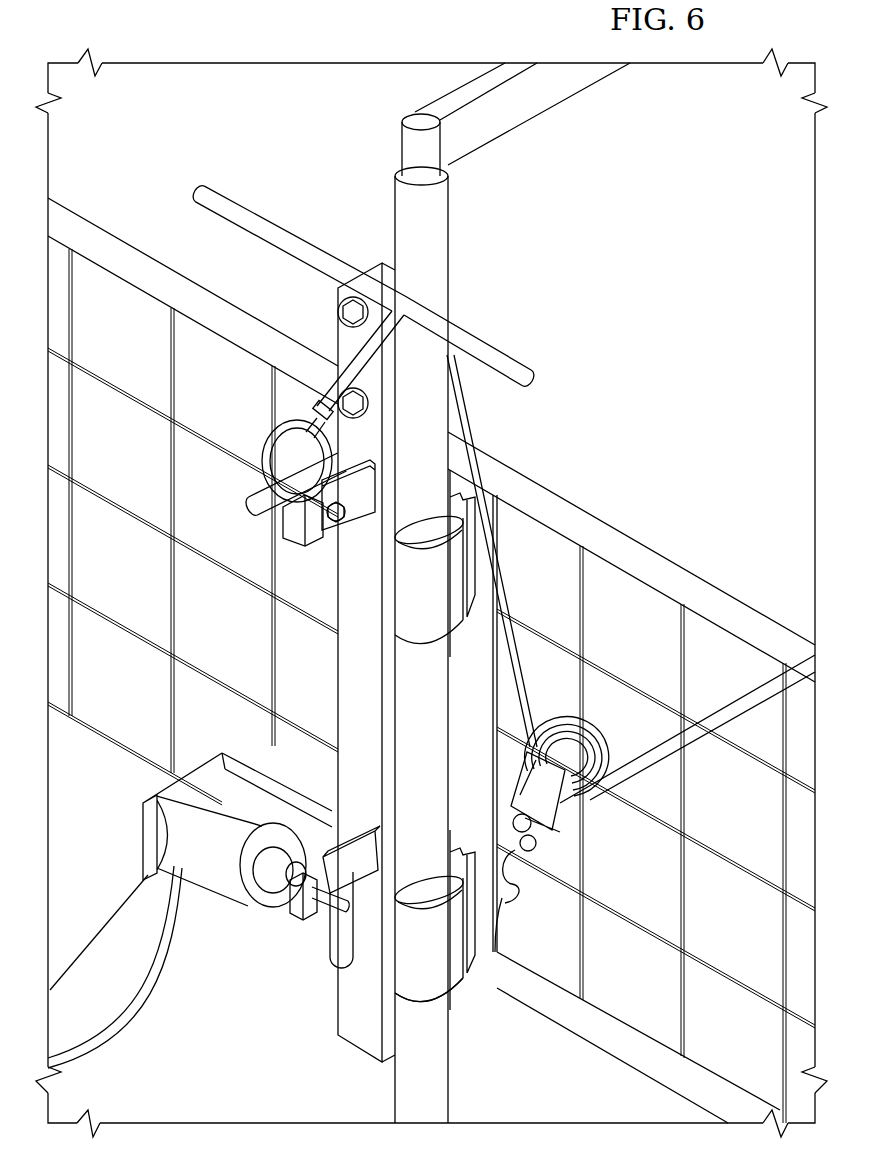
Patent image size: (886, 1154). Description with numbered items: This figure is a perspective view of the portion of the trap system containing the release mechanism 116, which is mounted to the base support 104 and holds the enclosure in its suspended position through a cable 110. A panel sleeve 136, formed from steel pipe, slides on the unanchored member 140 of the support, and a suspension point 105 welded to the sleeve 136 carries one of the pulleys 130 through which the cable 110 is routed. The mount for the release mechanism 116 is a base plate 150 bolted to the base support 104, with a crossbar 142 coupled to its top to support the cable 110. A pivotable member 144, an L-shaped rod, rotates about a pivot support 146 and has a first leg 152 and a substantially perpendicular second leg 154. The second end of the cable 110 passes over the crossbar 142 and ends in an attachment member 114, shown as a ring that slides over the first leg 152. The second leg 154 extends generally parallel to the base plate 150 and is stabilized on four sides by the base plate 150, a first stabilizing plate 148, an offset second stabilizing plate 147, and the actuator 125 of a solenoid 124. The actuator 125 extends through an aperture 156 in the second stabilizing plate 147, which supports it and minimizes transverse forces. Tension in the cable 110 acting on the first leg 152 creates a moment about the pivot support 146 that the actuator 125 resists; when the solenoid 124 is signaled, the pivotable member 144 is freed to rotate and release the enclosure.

The base support 104 is at (452, 210).
The suspension point 105 is at (502, 910).
The cable 110 is at (472, 408).
The attachment member 114 is at (266, 442).
The release mechanism 116 is at (499, 328).
The solenoid 124 is at (195, 880).
The actuator 125 is at (367, 934).
The pulleys 130 is at (600, 722).
The sleeves 136 is at (448, 559).
The unanchored member 140 is at (451, 260).
The crossbar 142 is at (262, 206).
The pivotable member 144 is at (284, 522).
The pivot support 146 is at (345, 516).
The second stabilizing plate 147 is at (290, 912).
The first stabilizing plate 148 is at (362, 830).
The base plate 150 is at (336, 333).
The first leg 152 is at (251, 499).
The second leg 154 is at (338, 680).
The aperture 156 is at (336, 917).